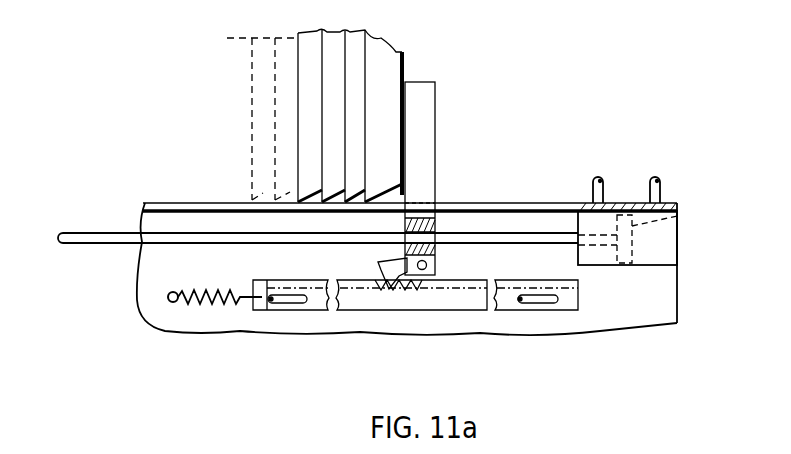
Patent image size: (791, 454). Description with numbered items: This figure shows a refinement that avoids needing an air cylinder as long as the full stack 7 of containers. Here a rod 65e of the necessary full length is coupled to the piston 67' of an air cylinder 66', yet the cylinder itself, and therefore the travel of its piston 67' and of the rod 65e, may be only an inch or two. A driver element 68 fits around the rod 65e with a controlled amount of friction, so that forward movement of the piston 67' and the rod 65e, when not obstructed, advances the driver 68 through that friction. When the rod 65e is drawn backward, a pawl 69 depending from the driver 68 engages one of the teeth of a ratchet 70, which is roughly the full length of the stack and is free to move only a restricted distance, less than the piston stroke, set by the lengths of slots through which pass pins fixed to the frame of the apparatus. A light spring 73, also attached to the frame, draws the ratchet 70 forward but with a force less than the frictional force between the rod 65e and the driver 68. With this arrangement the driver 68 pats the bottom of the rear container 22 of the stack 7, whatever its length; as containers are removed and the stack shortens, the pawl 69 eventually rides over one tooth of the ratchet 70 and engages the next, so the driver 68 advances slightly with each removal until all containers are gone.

The stack of containers 7 is at (308, 112).
The rear container 22 is at (388, 66).
The driver element 68 is at (424, 118).
The rod 65e is at (483, 238).
The air cylinder 66' is at (627, 201).
The piston 67' is at (671, 231).
The pawl 69 is at (378, 264).
The ratchet 70 is at (422, 304).
The light spring 73 is at (197, 299).